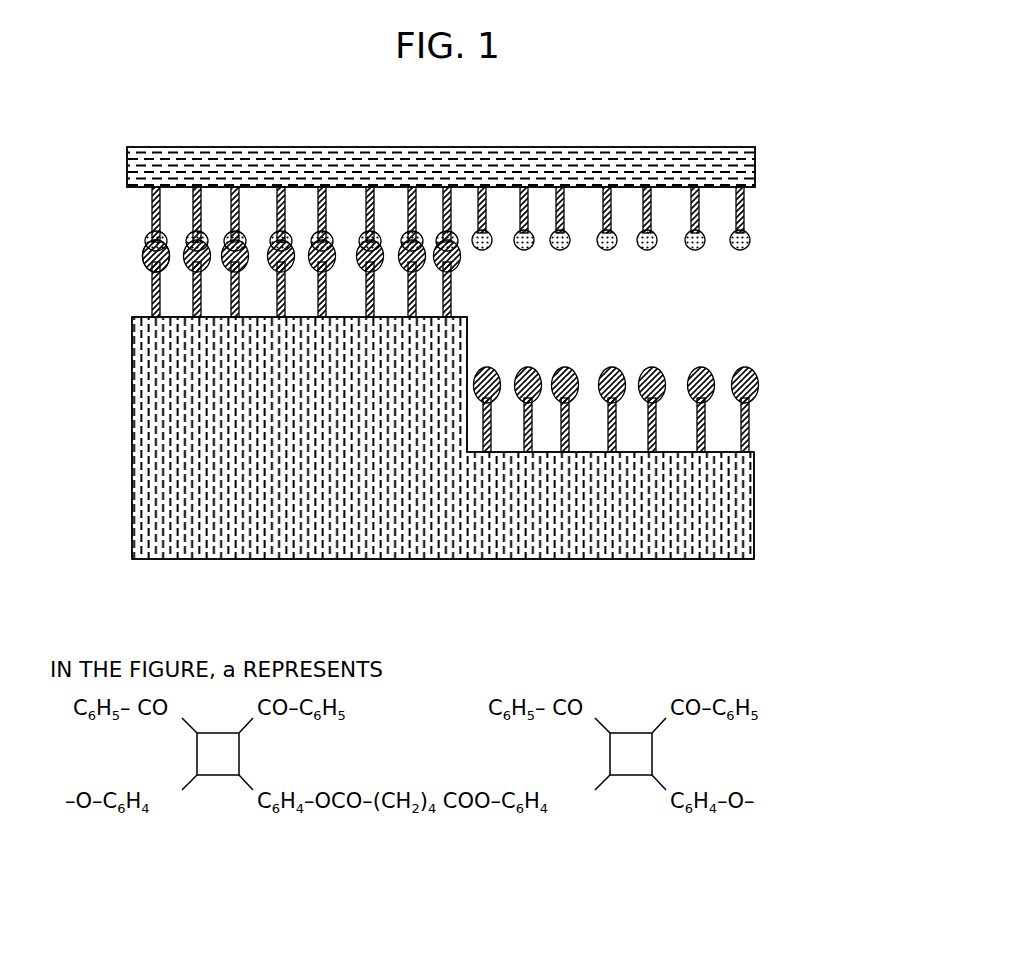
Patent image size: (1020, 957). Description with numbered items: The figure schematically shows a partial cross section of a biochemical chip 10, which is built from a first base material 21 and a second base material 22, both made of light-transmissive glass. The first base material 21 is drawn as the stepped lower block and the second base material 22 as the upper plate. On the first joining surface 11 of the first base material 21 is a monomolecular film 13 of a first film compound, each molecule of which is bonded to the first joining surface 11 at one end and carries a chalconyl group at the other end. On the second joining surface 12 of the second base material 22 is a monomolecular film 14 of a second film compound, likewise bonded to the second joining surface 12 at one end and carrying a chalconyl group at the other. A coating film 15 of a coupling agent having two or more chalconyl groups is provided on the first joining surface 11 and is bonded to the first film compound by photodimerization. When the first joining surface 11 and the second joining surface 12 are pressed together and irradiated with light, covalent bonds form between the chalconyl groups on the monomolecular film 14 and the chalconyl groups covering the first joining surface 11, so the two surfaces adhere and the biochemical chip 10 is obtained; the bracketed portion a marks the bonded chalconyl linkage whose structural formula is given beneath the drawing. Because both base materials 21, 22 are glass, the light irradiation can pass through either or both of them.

The biochemical chip 10 is at (738, 316).
The first joining surface 11 is at (144, 306).
The second joining surface 12 is at (141, 196).
The monomolecular film 13 is at (460, 290).
The monomolecular film 14 is at (750, 221).
The coating film 15 is at (763, 373).
The first base material 21 is at (675, 558).
The second base material 22 is at (632, 152).
The cyclobutane crosslinked portion a is at (140, 230).